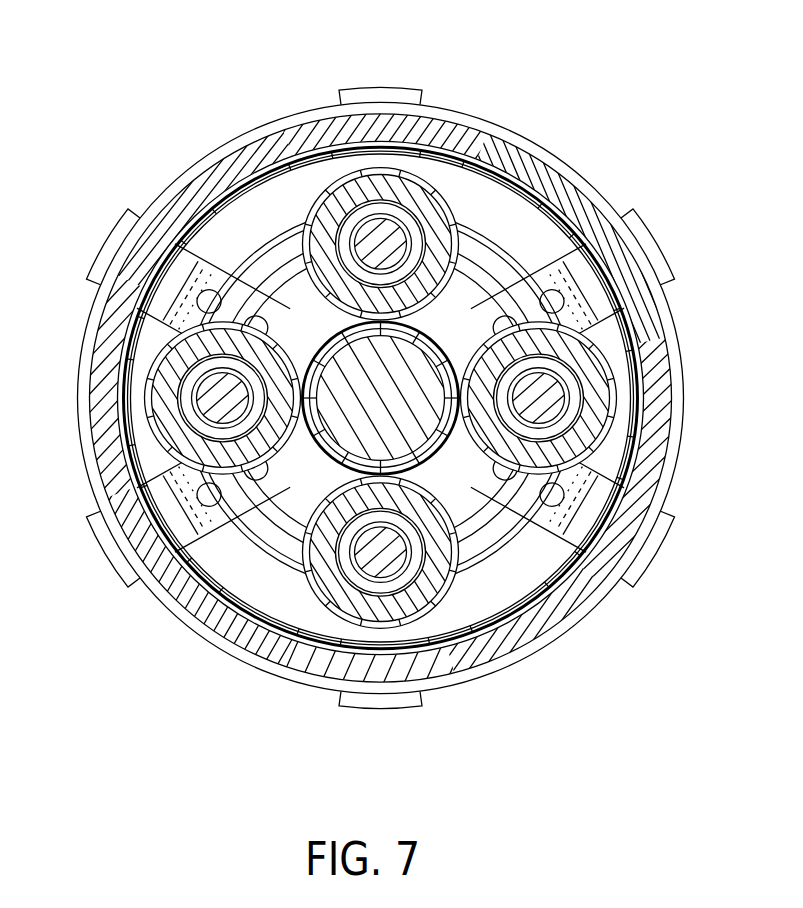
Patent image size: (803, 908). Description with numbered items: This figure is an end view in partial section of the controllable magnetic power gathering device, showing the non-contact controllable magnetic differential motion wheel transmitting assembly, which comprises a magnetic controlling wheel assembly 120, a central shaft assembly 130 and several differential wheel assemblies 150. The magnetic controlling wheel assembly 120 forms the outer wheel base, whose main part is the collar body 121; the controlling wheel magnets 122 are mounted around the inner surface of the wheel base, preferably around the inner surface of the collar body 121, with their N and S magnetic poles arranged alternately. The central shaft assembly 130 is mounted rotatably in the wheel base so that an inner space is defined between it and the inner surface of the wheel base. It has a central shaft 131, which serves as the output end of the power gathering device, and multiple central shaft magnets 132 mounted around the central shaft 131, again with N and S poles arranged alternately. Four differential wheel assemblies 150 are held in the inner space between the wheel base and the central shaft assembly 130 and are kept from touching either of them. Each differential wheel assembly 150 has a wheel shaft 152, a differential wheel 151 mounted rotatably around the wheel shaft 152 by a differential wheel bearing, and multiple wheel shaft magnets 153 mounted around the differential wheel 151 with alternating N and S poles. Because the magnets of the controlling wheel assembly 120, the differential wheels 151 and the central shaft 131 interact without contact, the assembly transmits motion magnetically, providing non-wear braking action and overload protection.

The magnetic controlling wheel assembly 120 is at (487, 104).
The collar body 121 is at (568, 195).
The controlling wheel magnets 122 is at (494, 170).
The central shaft assembly 130 is at (445, 338).
The central shaft 131 is at (413, 435).
The central shaft magnets 132 is at (443, 450).
The differential wheel assembly 150 is at (297, 200).
The differential wheel 151 is at (327, 180).
The wheel shaft 152 is at (375, 168).
The wheel shaft magnets 153 is at (392, 230).